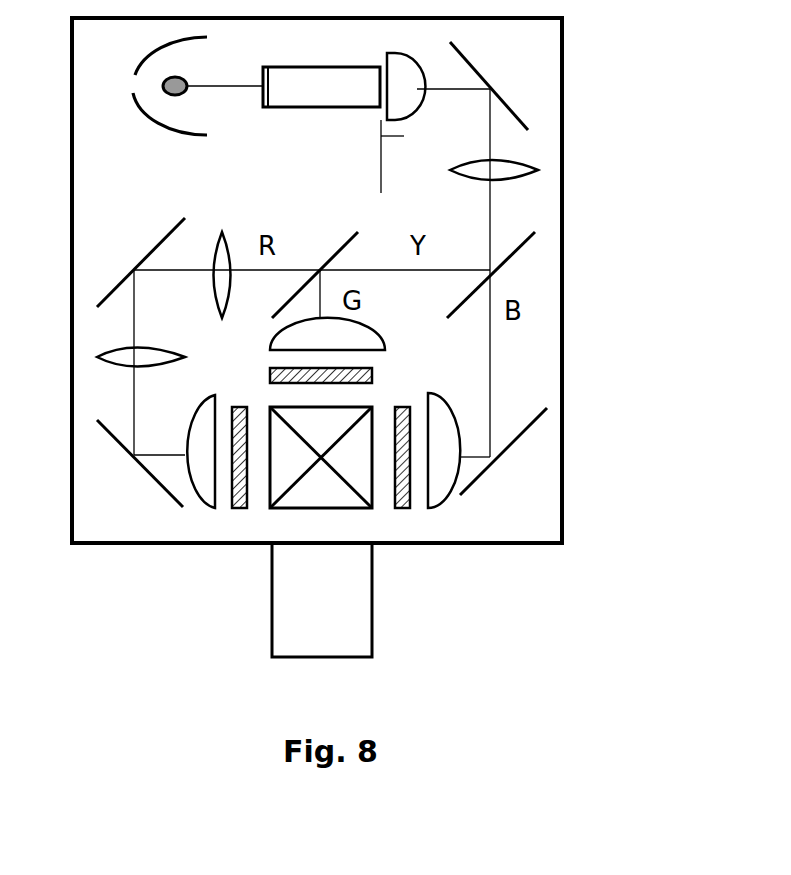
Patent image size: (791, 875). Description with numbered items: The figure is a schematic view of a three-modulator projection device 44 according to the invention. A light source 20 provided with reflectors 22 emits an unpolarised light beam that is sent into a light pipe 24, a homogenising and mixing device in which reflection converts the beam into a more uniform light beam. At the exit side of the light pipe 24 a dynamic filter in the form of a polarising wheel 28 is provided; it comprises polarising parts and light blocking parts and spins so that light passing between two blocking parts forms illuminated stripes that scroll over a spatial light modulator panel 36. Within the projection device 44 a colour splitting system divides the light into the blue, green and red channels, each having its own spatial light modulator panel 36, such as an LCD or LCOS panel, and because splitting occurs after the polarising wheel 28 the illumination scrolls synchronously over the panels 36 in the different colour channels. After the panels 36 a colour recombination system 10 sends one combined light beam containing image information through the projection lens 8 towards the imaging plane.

The projection lens 8 is at (285, 567).
The colour recombination system 10 is at (340, 497).
The light source 20 is at (182, 91).
The reflectors 22 is at (147, 50).
The light pipe 24 is at (315, 78).
The polarising wheel 28 is at (380, 153).
The spatial light modulator panel 36 is at (242, 407).
The projection device 44 is at (562, 110).